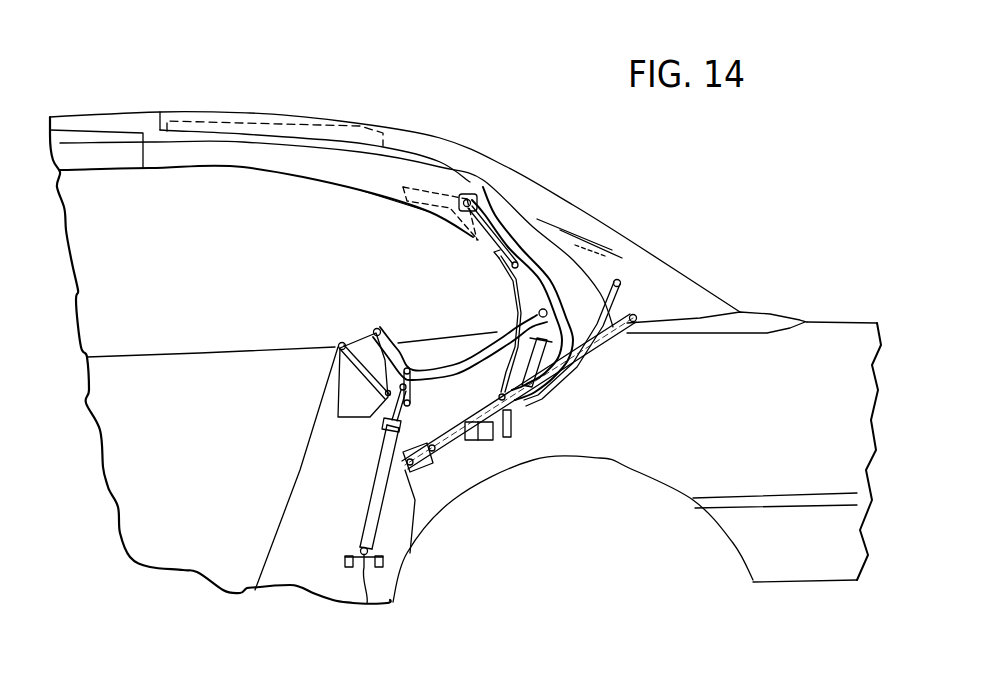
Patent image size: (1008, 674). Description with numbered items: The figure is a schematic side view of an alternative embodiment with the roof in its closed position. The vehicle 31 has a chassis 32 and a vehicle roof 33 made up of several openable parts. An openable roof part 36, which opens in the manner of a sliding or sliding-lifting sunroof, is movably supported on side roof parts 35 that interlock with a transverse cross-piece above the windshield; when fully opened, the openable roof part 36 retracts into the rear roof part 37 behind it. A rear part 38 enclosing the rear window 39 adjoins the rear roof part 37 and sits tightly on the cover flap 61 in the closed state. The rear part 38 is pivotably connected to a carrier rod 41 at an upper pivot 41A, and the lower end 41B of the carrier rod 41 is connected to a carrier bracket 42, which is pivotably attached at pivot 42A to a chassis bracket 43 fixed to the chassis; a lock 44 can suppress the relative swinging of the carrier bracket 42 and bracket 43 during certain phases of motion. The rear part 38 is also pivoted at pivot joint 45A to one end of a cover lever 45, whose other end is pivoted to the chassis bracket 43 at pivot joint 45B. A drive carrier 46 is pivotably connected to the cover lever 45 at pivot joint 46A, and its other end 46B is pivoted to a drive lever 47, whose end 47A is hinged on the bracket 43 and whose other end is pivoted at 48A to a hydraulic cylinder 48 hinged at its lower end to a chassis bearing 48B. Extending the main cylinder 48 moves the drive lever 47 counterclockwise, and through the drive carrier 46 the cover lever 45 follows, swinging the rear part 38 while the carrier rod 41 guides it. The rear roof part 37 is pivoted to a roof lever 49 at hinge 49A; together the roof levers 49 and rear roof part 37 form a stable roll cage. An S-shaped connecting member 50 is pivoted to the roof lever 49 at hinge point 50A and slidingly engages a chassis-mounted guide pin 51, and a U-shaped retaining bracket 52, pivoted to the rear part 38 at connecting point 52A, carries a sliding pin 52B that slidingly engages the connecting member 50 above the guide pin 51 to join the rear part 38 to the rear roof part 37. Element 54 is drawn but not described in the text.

The vehicle 31 is at (589, 516).
The chassis 32 is at (730, 447).
The vehicle roof 33 is at (280, 100).
The side roof parts 35 is at (100, 150).
The openable roof part 36 is at (213, 123).
The rear roof part 37 is at (407, 152).
The rear part 38 is at (572, 278).
The rear window 39 is at (672, 295).
The carrier rod 41 is at (603, 333).
The upper pivot 41A is at (637, 320).
The lower end of carrier rod 41B is at (445, 468).
The carrier bracket 42 is at (410, 483).
The pivot 42A is at (372, 440).
The chassis bracket 43 is at (363, 414).
The lock 44 is at (468, 443).
The cover lever 45 is at (457, 372).
The pivot joint 45A is at (530, 315).
The pivot joint 45B is at (377, 328).
The drive carrier 46 is at (388, 395).
The pivot joint 46A is at (403, 372).
The other end of drive carrier 46B is at (395, 410).
The drive lever 47 is at (352, 362).
The bearing point 47A is at (340, 343).
The hydraulic cylinder 48 is at (375, 498).
The pivot of drive lever to cylinder 48A is at (415, 490).
The bearing 48B is at (367, 575).
The roof lever 49 is at (518, 200).
The hinge 49A is at (497, 230).
The connecting member 50 is at (510, 283).
The hinge point 50A is at (583, 243).
The guide pin 51 is at (540, 462).
The retaining bracket 52 is at (570, 380).
The connecting point 52A is at (655, 288).
The sliding pin 52B is at (503, 407).
The pivot bracket 54 is at (433, 190).
The cover flap 61 is at (763, 320).